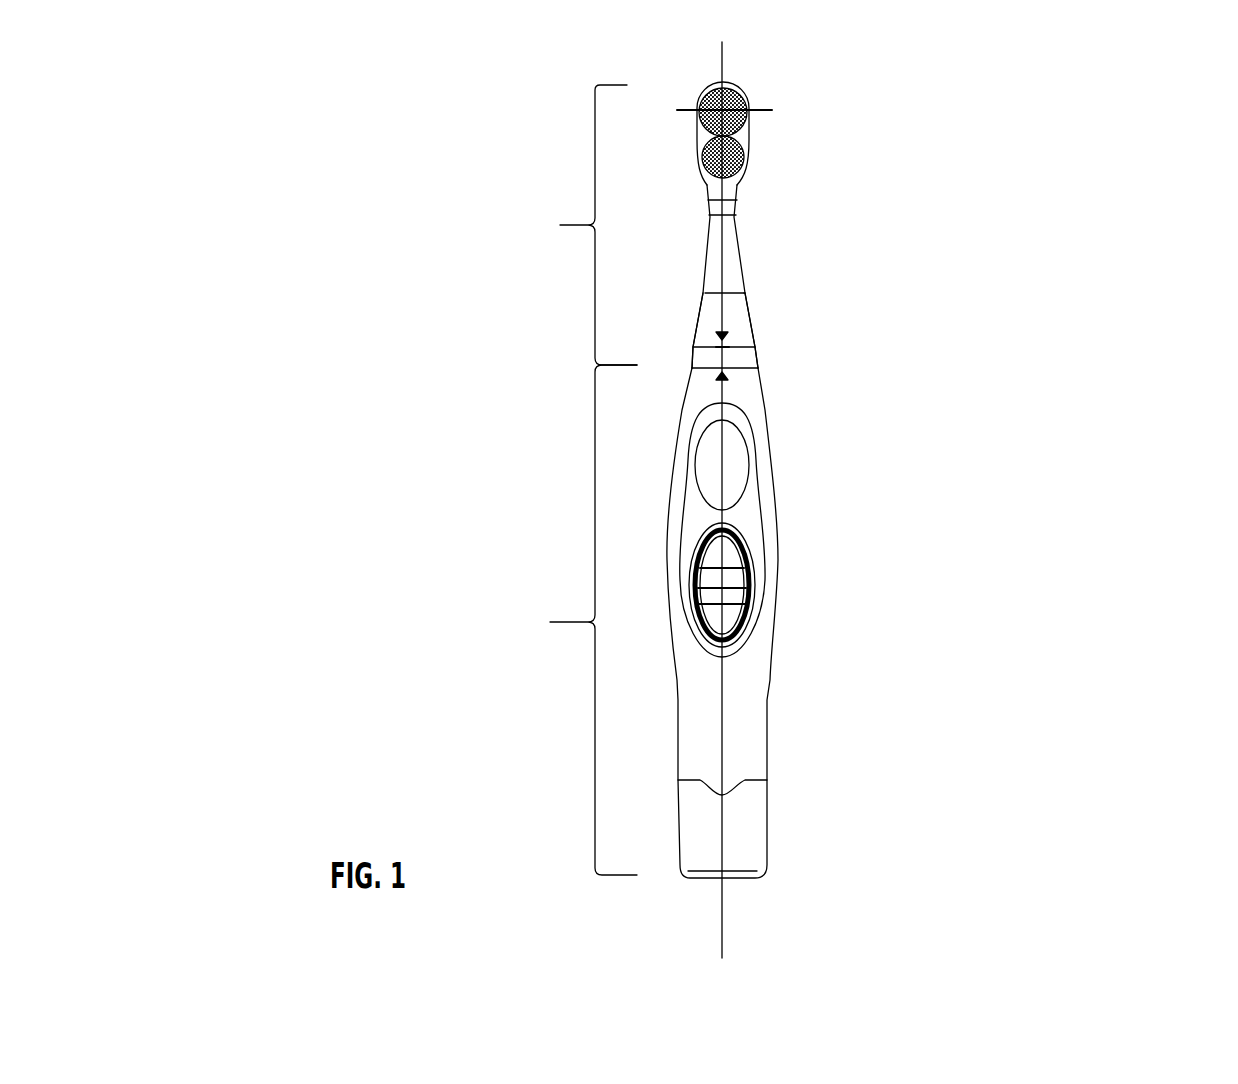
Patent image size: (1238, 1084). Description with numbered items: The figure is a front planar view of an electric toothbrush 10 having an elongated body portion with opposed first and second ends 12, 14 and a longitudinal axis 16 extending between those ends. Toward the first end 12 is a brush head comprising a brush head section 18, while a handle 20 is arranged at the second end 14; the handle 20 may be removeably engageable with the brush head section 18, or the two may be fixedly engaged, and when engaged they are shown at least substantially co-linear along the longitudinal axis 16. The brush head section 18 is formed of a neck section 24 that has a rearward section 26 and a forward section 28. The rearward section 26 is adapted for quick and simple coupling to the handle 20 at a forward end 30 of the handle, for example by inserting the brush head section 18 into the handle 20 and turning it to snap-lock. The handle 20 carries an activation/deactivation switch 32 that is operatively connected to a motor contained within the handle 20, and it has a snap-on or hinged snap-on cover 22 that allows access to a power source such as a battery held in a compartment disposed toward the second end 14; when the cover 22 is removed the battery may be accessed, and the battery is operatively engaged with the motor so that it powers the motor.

The electric toothbrush 10 is at (1080, 357).
The first end 12 is at (784, 402).
The second end 14 is at (797, 522).
The longitudinal axis 16 is at (730, 68).
The brush head section 18 is at (575, 225).
The handle 20 is at (575, 620).
The cover 22 is at (766, 813).
The neck section 24 is at (736, 252).
The rearward section 26 is at (742, 272).
The forward section 28 is at (737, 205).
The forward end 30 is at (757, 370).
The activation/deactivation switch 32 is at (752, 598).